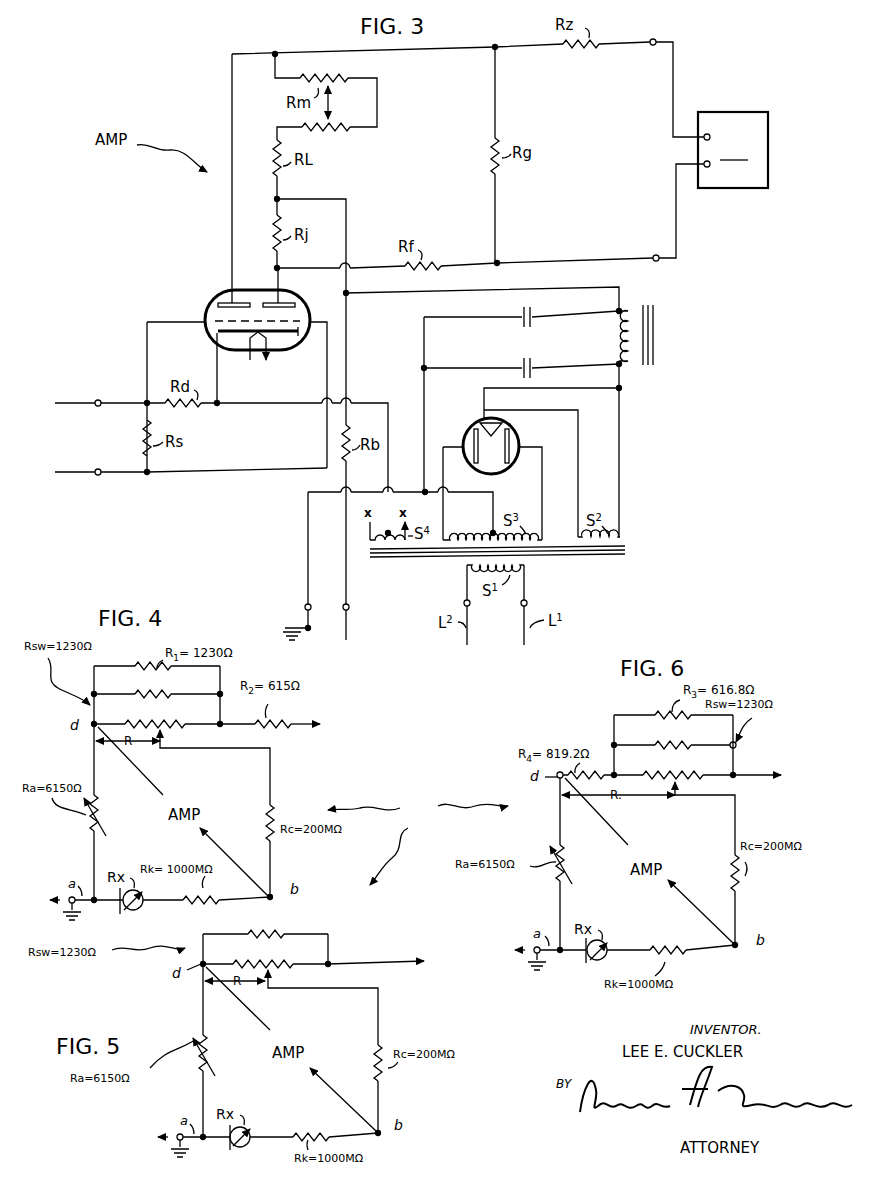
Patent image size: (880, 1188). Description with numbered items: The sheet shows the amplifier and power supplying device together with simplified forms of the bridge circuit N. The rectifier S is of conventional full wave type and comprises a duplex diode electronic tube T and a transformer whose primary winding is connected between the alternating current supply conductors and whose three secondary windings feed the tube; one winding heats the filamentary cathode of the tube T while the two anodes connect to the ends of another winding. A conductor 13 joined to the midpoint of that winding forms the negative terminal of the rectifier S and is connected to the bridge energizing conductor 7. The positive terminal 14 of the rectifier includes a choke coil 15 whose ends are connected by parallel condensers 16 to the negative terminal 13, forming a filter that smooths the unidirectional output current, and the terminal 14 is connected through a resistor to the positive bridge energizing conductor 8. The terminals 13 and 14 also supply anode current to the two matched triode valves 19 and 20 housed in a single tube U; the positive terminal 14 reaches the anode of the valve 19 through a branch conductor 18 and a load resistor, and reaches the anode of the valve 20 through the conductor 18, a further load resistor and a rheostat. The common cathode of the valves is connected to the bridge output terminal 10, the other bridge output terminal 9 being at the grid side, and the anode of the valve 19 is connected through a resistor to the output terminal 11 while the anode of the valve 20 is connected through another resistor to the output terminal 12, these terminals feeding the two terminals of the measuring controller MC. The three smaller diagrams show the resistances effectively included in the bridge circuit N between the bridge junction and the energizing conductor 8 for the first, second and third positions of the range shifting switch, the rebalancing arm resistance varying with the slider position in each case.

In FIG. 3, the bridge energizing conductor 7 is at (311, 640).
In FIG. 4, the bridge energizing conductor 7 is at (54, 894).
In FIG. 5, the bridge energizing conductor 7 is at (160, 1133).
In FIG. 6, the bridge energizing conductor 7 is at (524, 946).
In FIG. 3, the positive bridge energizing conductor 8 is at (349, 640).
In FIG. 4, the positive bridge energizing conductor 8 is at (304, 716).
In FIG. 5, the positive bridge energizing conductor 8 is at (385, 948).
In FIG. 6, the positive bridge energizing conductor 8 is at (750, 768).
In FIG. 3, the bridge output terminal 9 is at (72, 472).
In FIG. 3, the bridge output terminal 10 is at (72, 403).
In FIG. 3, the output terminal 11 is at (676, 222).
In FIG. 3, the output terminal 12 is at (673, 100).
In FIG. 3, the conductor 13 is at (308, 528).
In FIG. 3, the positive terminal 14 is at (622, 388).
In FIG. 3, the choke coil 15 is at (624, 337).
In FIG. 3, the condensers 16 is at (530, 362).
In FIG. 3, the branch conductor 18 is at (346, 232).
In FIG. 3, the electronic amplifying valve 19 is at (314, 320).
In FIG. 3, the electronic amplifying valve 20 is at (208, 310).
In FIG. 3, the tube U is at (241, 324).
In FIG. 3, the rectifier S is at (470, 421).
In FIG. 3, the duplex diode electronic tube T is at (512, 446).
In FIG. 3, the measuring controller MC is at (733, 150).
In FIG. 4, the bridge circuit N is at (418, 843).